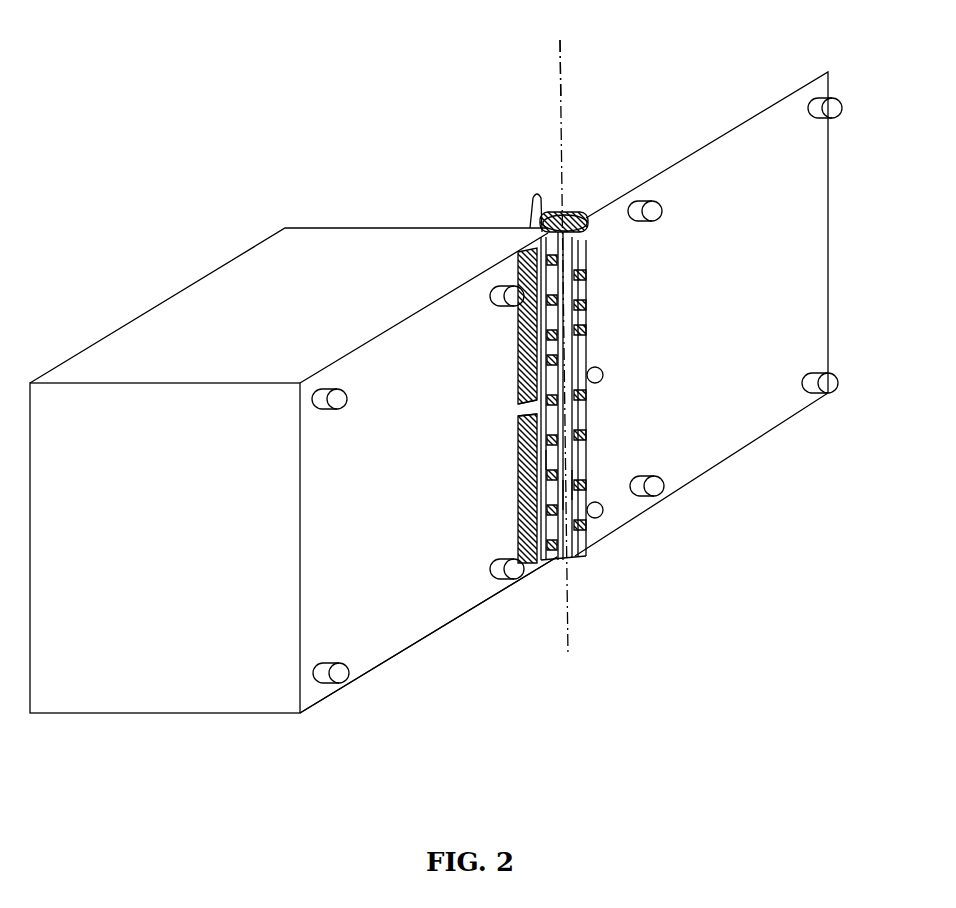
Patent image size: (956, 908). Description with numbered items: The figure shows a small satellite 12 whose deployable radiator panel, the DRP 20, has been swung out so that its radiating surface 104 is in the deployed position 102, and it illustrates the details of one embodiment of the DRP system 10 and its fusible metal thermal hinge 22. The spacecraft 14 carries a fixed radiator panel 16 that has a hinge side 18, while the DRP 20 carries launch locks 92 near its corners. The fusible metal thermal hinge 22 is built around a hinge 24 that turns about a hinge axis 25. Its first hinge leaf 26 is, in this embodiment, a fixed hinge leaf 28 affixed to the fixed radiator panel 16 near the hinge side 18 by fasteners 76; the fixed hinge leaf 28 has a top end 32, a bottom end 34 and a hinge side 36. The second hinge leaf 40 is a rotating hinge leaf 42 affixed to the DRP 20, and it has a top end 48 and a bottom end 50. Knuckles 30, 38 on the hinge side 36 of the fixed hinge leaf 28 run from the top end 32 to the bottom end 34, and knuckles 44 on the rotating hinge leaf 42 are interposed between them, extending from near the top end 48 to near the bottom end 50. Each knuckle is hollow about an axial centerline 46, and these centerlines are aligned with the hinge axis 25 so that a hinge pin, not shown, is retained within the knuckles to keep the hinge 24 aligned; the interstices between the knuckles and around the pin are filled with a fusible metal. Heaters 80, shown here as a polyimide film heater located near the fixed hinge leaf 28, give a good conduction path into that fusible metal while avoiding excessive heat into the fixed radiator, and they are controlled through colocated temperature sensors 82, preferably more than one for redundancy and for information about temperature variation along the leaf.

The DRP system 10 is at (445, 98).
The small satellite 12 is at (132, 198).
The spacecraft 14 is at (165, 548).
The fixed radiator panel 16 is at (385, 640).
The hinge side 18 is at (520, 413).
The DRP 20 is at (748, 112).
The fusible metal thermal hinge 22 is at (612, 338).
The hinge 24 is at (590, 284).
The hinge axis 25 is at (560, 78).
The first hinge leaf 26 is at (552, 525).
The fixed hinge leaf 28 is at (550, 323).
The knuckle 30 is at (578, 556).
The top end 32 is at (548, 228).
The bottom end 34 is at (553, 570).
The hinge side 36 is at (555, 460).
The knuckle 38 is at (578, 495).
The second hinge leaf 40 is at (585, 245).
The rotating hinge leaf 42 is at (580, 318).
The knuckles 44 is at (572, 500).
The axial centerline 46 is at (560, 63).
The top end 48 is at (590, 195).
The bottom end 50 is at (583, 552).
The fasteners 76 is at (550, 288).
The heaters 80 is at (520, 350).
The temperature sensors 82 is at (598, 378).
The launch locks 92 is at (828, 105).
The deployed position 102 is at (690, 640).
The radiating surface 104 is at (745, 293).